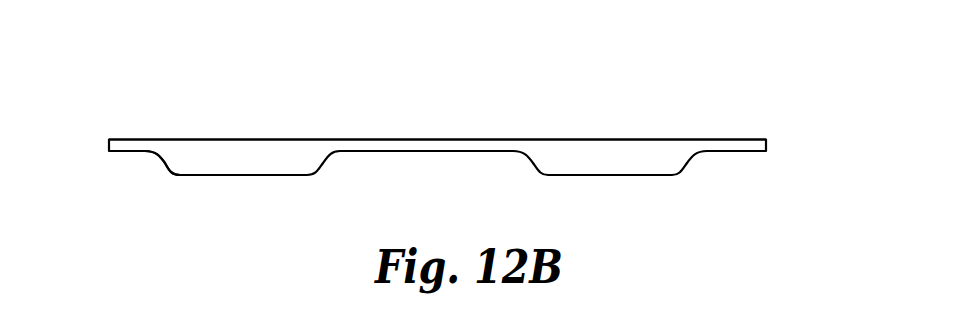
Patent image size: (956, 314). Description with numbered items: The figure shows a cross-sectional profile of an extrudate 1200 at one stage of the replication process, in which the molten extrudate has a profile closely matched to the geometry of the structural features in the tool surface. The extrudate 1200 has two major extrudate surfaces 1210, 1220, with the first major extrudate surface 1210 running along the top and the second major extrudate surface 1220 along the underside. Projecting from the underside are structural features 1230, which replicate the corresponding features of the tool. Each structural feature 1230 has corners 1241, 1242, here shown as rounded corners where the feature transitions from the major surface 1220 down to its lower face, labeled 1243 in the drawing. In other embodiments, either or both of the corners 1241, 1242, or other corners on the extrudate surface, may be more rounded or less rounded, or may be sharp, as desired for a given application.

The extrudate 1200 is at (754, 143).
The major extrudate surface 1210 is at (408, 138).
The major extrudate surface 1220 is at (368, 152).
The structural feature 1230 is at (223, 150).
The corner 1241 is at (152, 152).
The corner 1242 is at (170, 172).
The bottom surface 1243 is at (235, 175).